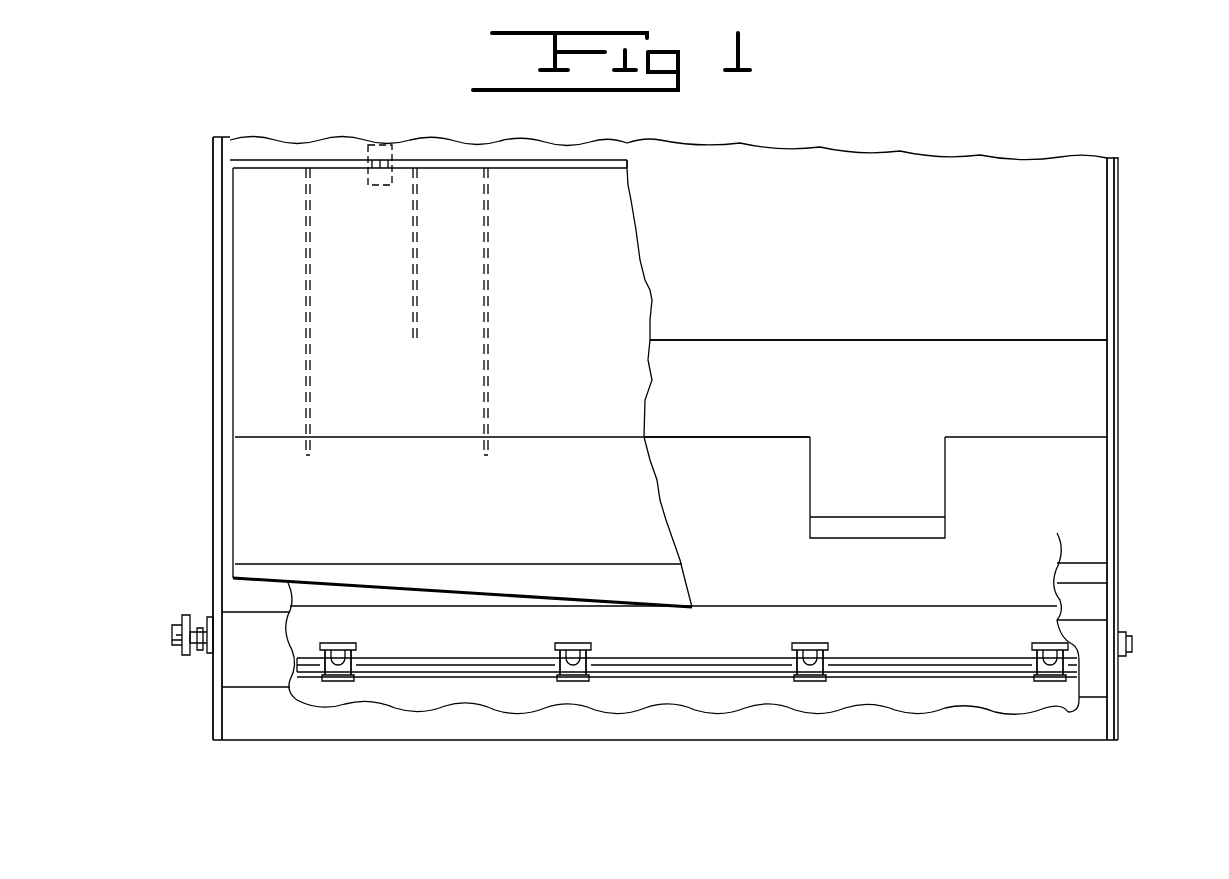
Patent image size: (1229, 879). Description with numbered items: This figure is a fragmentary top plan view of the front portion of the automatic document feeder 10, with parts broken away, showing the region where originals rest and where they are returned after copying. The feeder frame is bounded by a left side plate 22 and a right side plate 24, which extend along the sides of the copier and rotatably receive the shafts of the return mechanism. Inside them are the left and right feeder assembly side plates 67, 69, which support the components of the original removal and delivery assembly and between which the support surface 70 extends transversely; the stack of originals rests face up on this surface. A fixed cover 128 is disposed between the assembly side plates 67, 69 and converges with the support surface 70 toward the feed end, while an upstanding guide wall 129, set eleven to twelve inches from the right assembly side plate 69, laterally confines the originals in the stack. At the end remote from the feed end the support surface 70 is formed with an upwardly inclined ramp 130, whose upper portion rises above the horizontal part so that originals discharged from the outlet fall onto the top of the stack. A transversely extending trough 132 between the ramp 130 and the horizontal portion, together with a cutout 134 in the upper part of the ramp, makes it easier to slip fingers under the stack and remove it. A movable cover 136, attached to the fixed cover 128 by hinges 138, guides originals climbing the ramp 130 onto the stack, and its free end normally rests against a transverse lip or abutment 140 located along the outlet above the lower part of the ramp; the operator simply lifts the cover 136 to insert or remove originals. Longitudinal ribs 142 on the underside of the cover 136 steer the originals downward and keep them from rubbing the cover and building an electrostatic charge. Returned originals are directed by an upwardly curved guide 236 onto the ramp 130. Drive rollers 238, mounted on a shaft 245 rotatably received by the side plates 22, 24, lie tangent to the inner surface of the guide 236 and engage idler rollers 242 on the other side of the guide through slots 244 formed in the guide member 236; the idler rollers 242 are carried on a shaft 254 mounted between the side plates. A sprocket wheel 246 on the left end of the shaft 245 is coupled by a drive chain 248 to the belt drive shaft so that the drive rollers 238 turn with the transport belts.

The document feeder 10 is at (878, 760).
The left side plate 22 is at (213, 212).
The right side plate 24 is at (1118, 292).
The left feeder assembly side plate 67 is at (213, 390).
The right feeder assembly side plate 69 is at (1105, 297).
The support surface 70 is at (930, 271).
The fixed cover 128 is at (628, 157).
The upstanding guide wall 129 is at (417, 265).
The ramp 130 is at (745, 502).
The trough 132 is at (780, 392).
The cutout 134 is at (812, 485).
The movable cover 136 is at (651, 285).
The hinges 138 is at (378, 187).
The transverse lip or abutment 140 is at (1062, 560).
The longitudinal ribs 142 is at (490, 340).
The upwardly curved guide 236 is at (725, 605).
The drive rollers 238 is at (355, 658).
The second plurality of idler rollers 242 is at (343, 681).
The slots 244 is at (298, 658).
The shaft 245 is at (203, 652).
The sprocket wheel 246 is at (184, 622).
The drive chain 248 is at (183, 657).
The shaft 254 is at (490, 680).